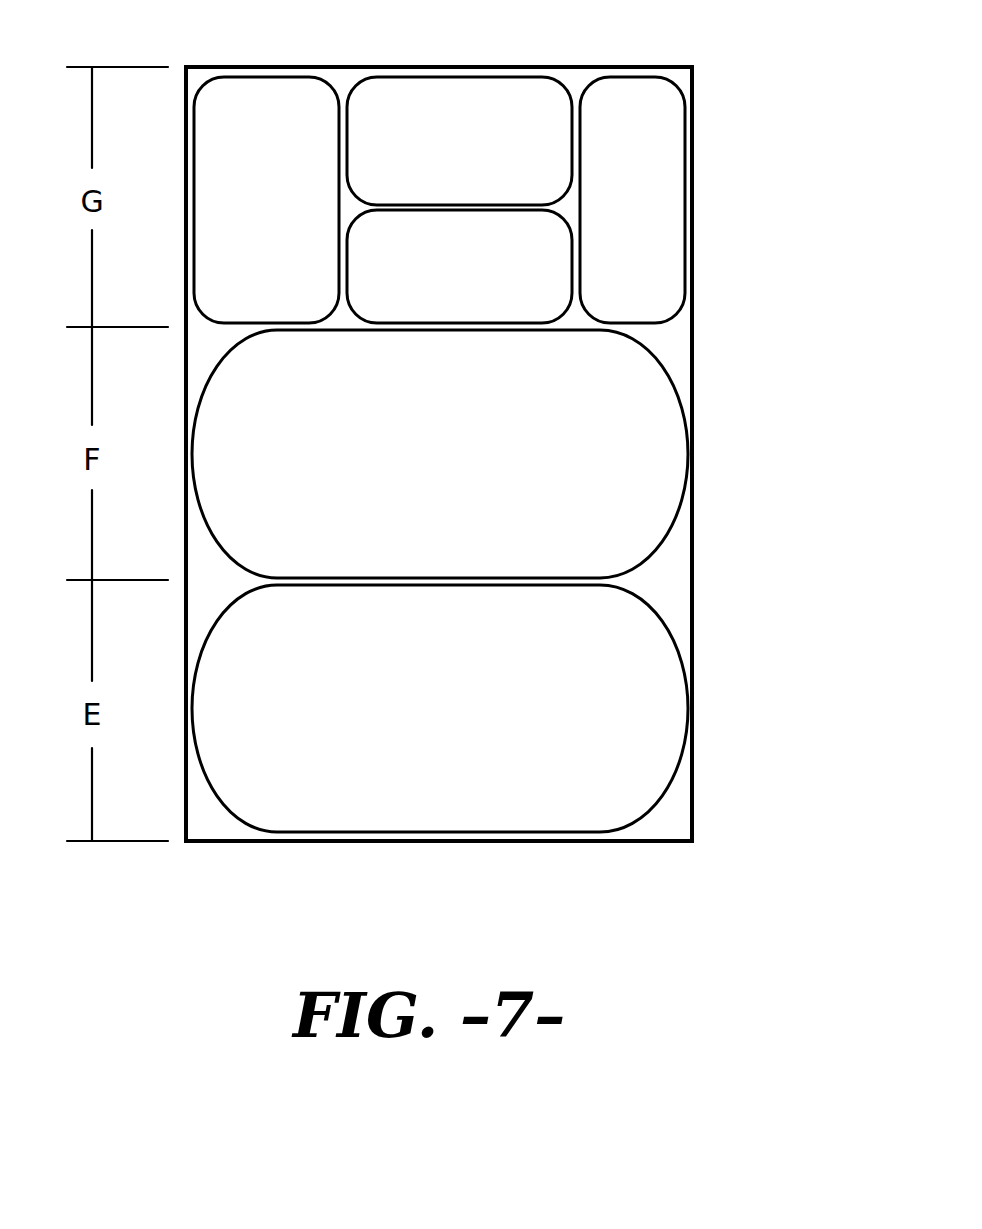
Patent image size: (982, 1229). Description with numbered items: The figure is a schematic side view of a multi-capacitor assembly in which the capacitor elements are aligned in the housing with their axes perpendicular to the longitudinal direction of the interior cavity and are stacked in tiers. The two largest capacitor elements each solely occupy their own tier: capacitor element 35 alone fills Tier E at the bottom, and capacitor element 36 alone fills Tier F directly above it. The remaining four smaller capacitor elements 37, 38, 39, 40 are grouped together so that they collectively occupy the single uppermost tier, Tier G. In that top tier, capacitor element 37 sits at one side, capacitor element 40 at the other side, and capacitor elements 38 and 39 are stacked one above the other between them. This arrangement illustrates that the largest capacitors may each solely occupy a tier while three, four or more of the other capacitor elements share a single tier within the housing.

The capacitor element 35 is at (642, 695).
The capacitor element 36 is at (640, 450).
The capacitor element 37 is at (262, 98).
The capacitor element 38 is at (415, 97).
The capacitor element 39 is at (448, 240).
The capacitor element 40 is at (627, 100).